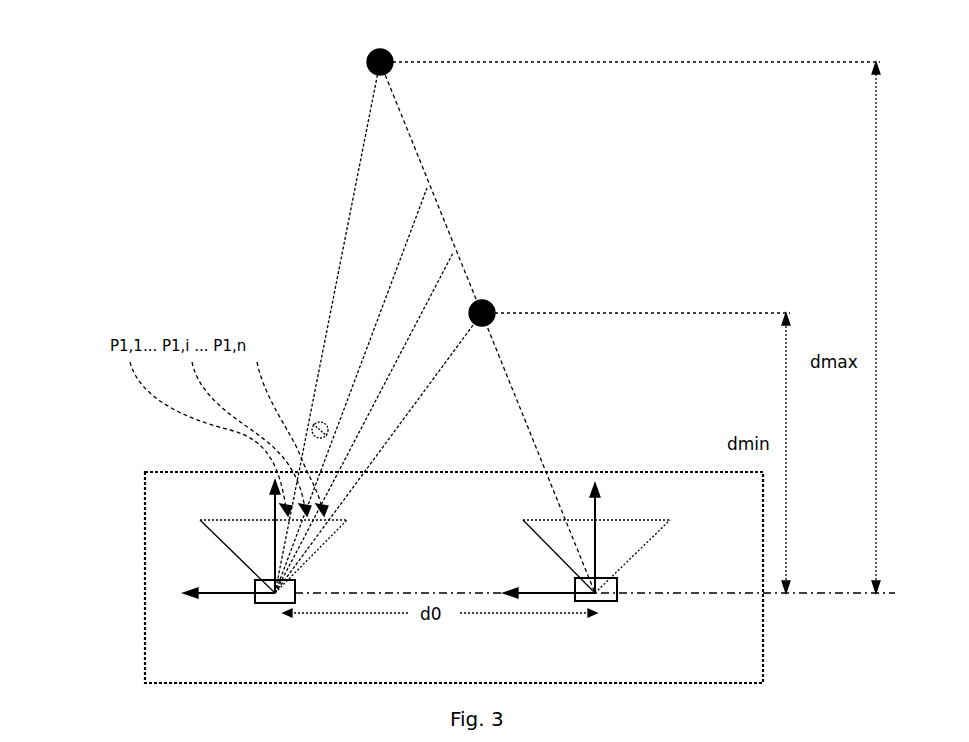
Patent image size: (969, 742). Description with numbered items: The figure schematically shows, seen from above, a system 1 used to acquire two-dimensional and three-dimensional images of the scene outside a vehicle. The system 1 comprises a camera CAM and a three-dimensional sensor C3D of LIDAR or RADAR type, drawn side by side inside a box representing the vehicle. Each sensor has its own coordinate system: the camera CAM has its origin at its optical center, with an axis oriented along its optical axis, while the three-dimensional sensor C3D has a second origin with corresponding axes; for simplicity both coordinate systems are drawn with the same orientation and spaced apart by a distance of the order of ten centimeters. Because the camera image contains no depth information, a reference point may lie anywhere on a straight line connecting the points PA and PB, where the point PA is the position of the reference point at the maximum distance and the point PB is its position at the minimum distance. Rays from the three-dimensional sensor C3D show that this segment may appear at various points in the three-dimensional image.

The system 1 is at (143, 601).
The 3D sensor C3D is at (296, 592).
The camera CAM is at (618, 590).
The point PA is at (623, 53).
The point PB is at (629, 304).